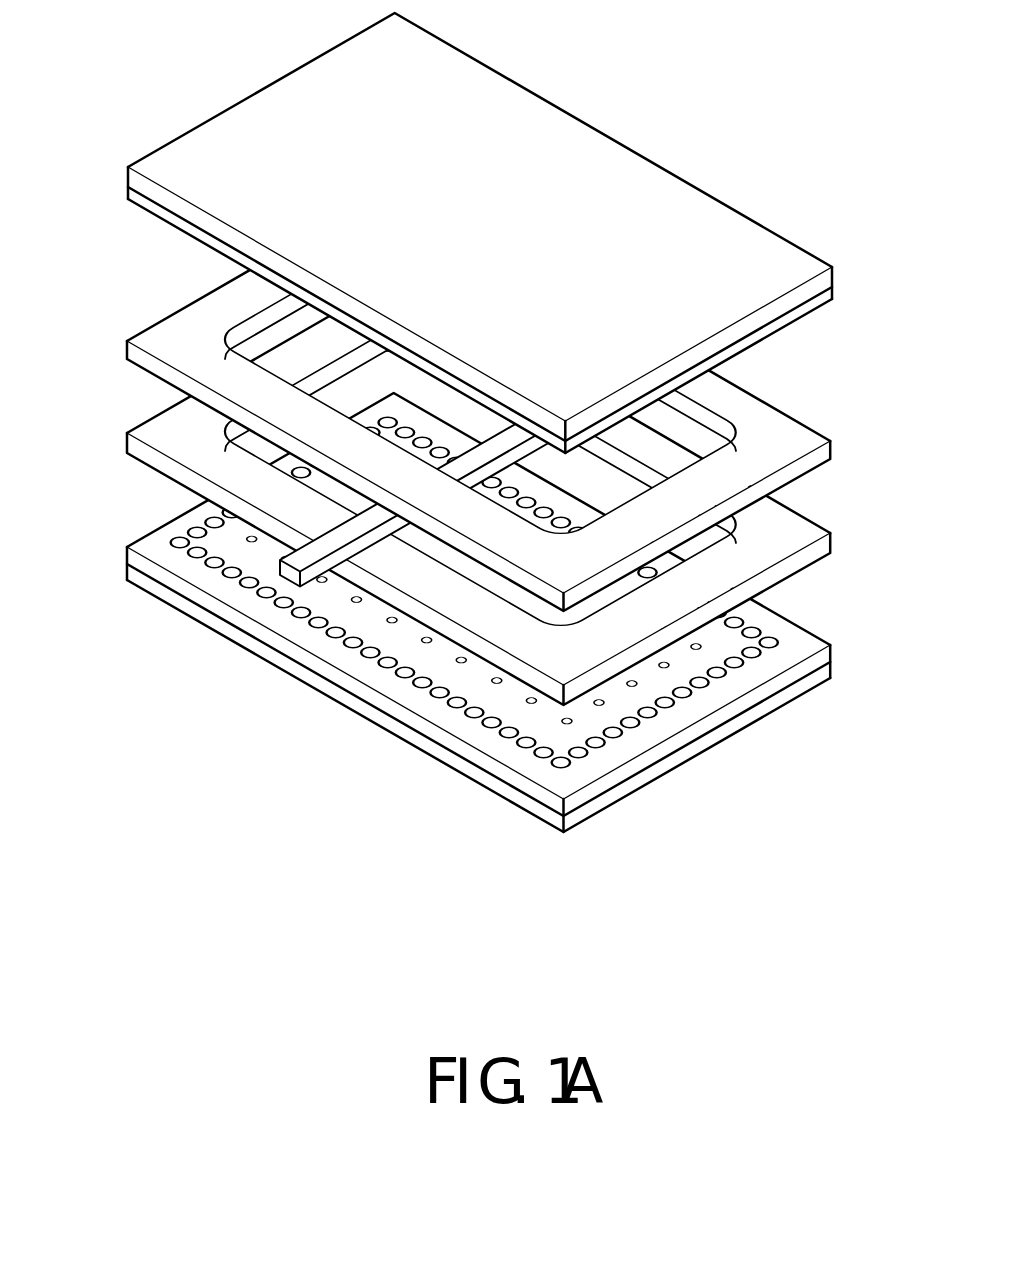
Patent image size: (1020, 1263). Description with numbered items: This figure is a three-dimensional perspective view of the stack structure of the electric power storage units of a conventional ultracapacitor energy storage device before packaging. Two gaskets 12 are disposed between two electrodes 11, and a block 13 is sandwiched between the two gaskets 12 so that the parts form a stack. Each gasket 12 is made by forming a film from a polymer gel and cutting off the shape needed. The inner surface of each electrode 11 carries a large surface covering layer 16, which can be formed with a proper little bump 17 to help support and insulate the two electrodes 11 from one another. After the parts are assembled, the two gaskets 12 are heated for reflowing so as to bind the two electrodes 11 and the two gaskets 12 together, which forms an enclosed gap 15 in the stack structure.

The electrode 11 is at (477, 422).
The gasket 12 is at (155, 432).
The block 13 is at (308, 560).
The enclosed gap 15 is at (702, 437).
The large surface covering layer 16 is at (818, 300).
The little bump 17 is at (770, 640).